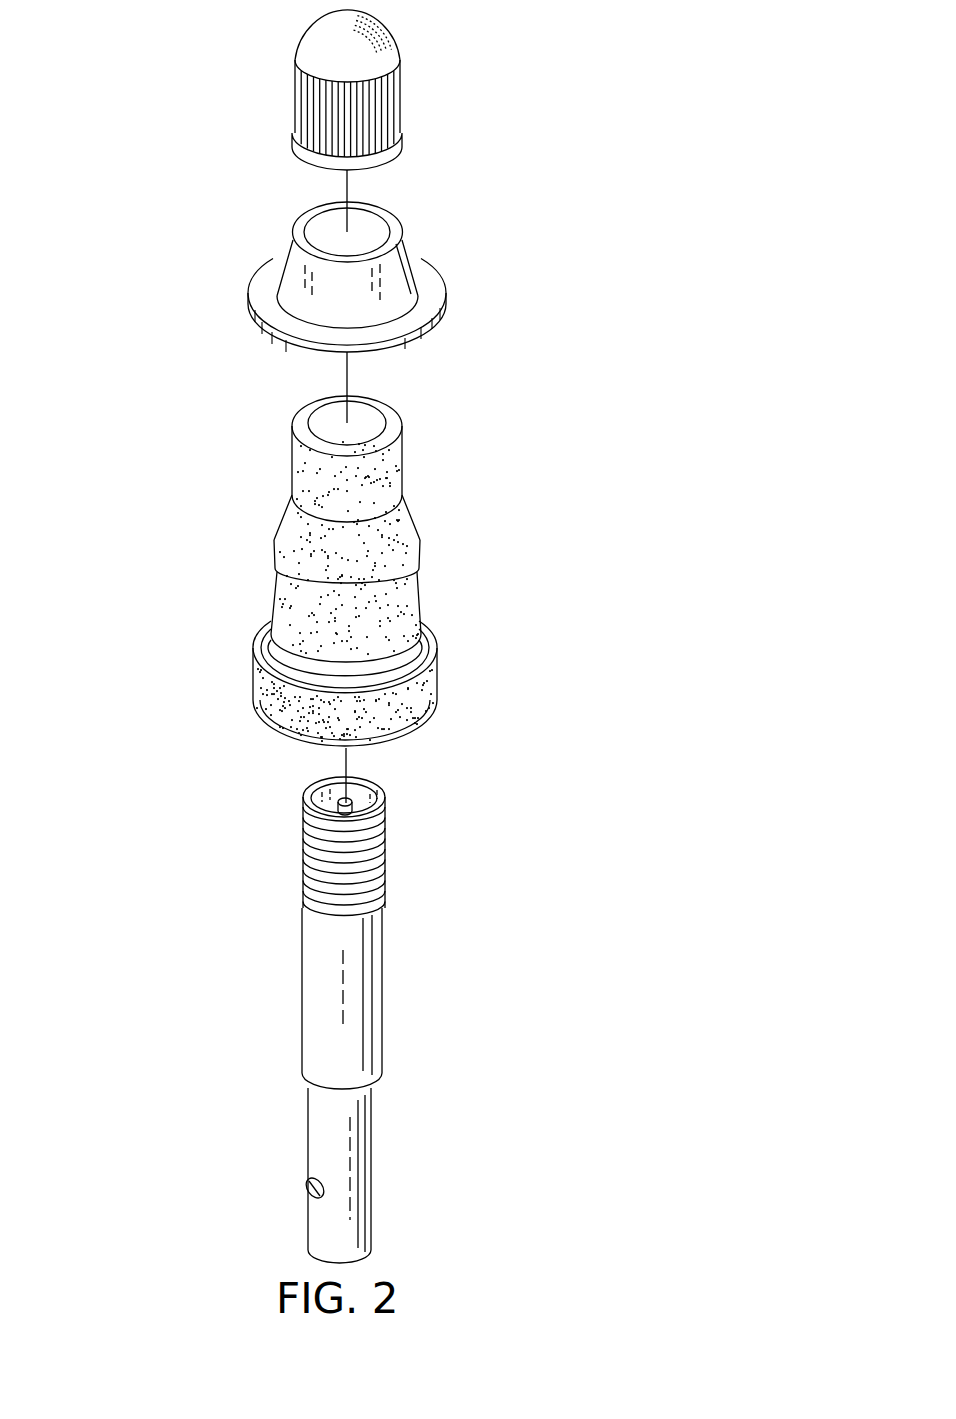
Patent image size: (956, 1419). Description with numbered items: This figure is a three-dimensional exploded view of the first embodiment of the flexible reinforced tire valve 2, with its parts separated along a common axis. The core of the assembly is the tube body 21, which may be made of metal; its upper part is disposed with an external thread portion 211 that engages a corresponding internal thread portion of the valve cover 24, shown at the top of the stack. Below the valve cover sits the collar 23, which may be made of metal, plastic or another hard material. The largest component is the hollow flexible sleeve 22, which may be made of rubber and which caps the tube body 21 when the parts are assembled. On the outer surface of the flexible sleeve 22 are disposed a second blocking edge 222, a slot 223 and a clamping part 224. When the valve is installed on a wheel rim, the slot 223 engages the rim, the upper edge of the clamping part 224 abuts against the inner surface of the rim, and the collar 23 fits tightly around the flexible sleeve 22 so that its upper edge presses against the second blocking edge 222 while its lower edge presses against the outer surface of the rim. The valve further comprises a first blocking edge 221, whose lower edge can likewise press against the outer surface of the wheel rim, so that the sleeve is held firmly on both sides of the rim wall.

The flexible reinforced tire valve 2 is at (172, 401).
The tube body 21 is at (431, 1020).
The external thread portion 211 is at (378, 857).
The flexible sleeve 22 is at (427, 529).
The first blocking edge 221 is at (403, 648).
The second blocking edge 222 is at (413, 560).
The slot 223 is at (397, 660).
The clamping part 224 is at (418, 683).
The collar 23 is at (440, 245).
The valve cover 24 is at (393, 103).